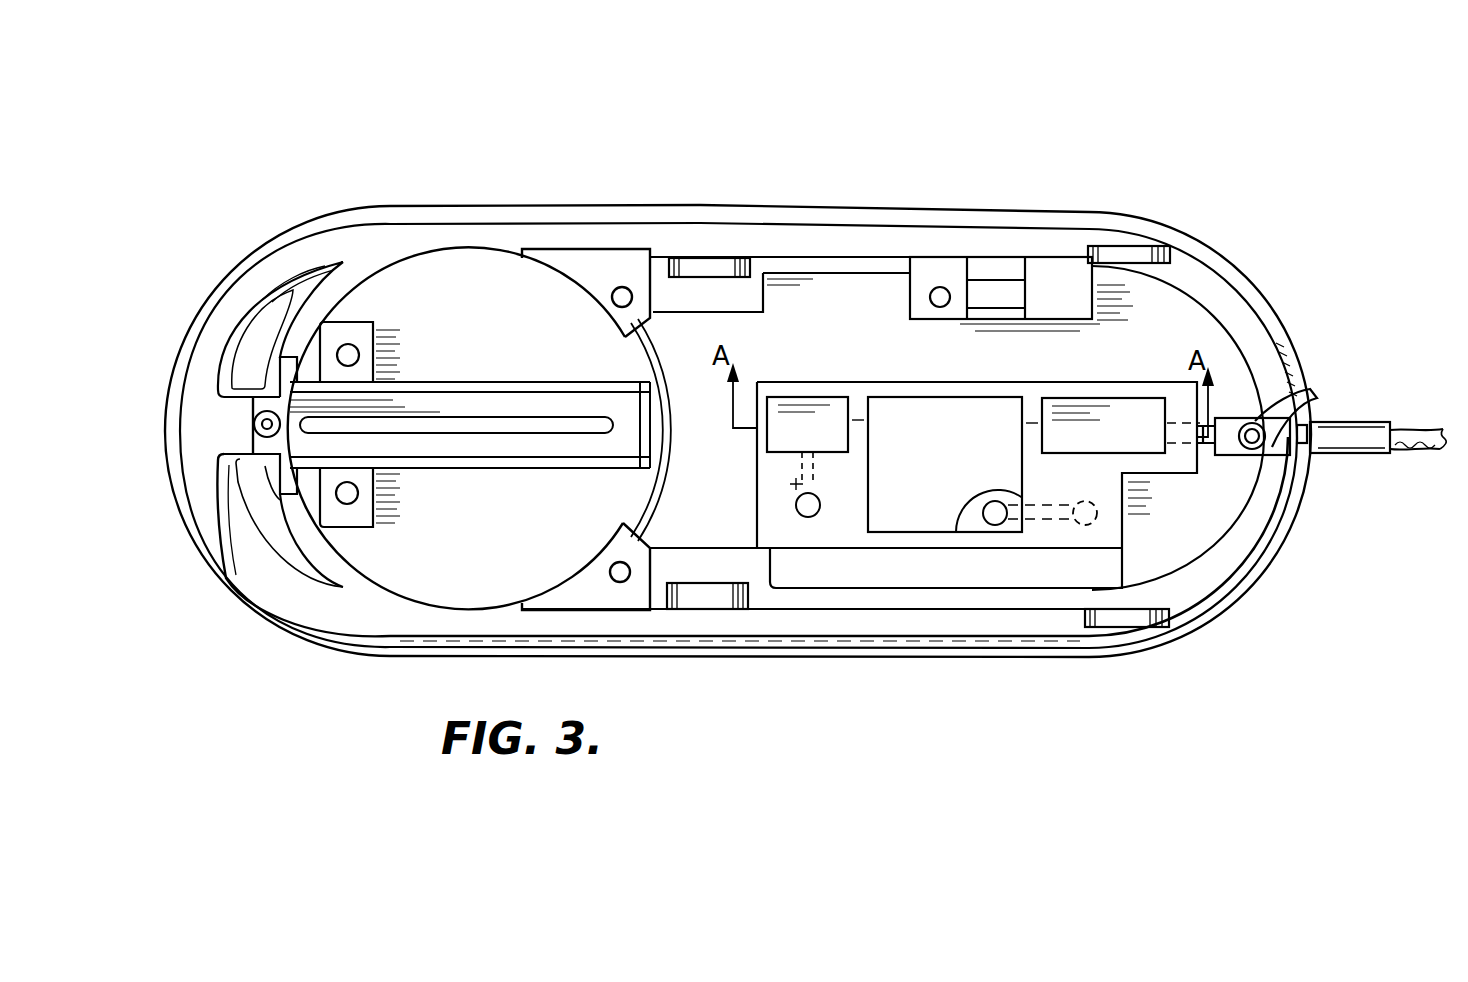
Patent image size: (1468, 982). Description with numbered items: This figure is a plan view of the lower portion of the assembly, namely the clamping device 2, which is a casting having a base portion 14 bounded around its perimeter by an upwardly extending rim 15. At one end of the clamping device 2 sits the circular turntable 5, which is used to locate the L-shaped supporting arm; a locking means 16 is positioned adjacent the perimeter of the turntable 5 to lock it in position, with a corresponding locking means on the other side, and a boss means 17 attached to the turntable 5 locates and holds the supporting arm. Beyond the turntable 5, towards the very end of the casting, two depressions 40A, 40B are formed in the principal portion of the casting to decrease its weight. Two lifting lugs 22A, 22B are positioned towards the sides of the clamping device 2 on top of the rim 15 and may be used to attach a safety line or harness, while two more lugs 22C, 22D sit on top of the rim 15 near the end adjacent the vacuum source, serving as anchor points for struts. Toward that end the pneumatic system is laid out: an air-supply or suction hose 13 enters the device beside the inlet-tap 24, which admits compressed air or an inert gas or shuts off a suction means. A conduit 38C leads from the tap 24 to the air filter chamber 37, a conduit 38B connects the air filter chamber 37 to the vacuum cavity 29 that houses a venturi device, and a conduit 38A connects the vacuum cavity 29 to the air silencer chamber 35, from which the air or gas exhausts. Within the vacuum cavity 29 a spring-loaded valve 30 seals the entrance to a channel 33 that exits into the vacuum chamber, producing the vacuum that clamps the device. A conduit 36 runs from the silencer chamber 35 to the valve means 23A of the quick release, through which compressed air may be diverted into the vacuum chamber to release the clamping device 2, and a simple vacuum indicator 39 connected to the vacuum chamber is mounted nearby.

The clamping device 2 is at (490, 200).
The turntable 5 is at (513, 356).
The air-supply hose 13 is at (1410, 425).
The base portion 14 is at (905, 572).
The rim 15 is at (1228, 565).
The locking means 16 is at (571, 262).
The boss means 17 is at (378, 323).
The lifting lug 22A is at (702, 605).
The lifting lug 22B is at (703, 272).
The lug 22C is at (1122, 630).
The lug 22D is at (1122, 256).
The valve means 23A is at (812, 518).
The inlet-tap 24 is at (1276, 440).
The vacuum cavity 29 is at (946, 481).
The valve 30 is at (1002, 525).
The channel 33 is at (1082, 528).
The air silencer chamber 35 is at (808, 413).
The conduit 36 is at (800, 484).
The air filter chamber 37 is at (1094, 420).
The conduit 38A is at (856, 445).
The conduit 38B is at (1032, 445).
The conduit 38C is at (1178, 420).
The vacuum indicator 39 is at (987, 285).
The depression 40A is at (266, 512).
The depression 40B is at (265, 340).